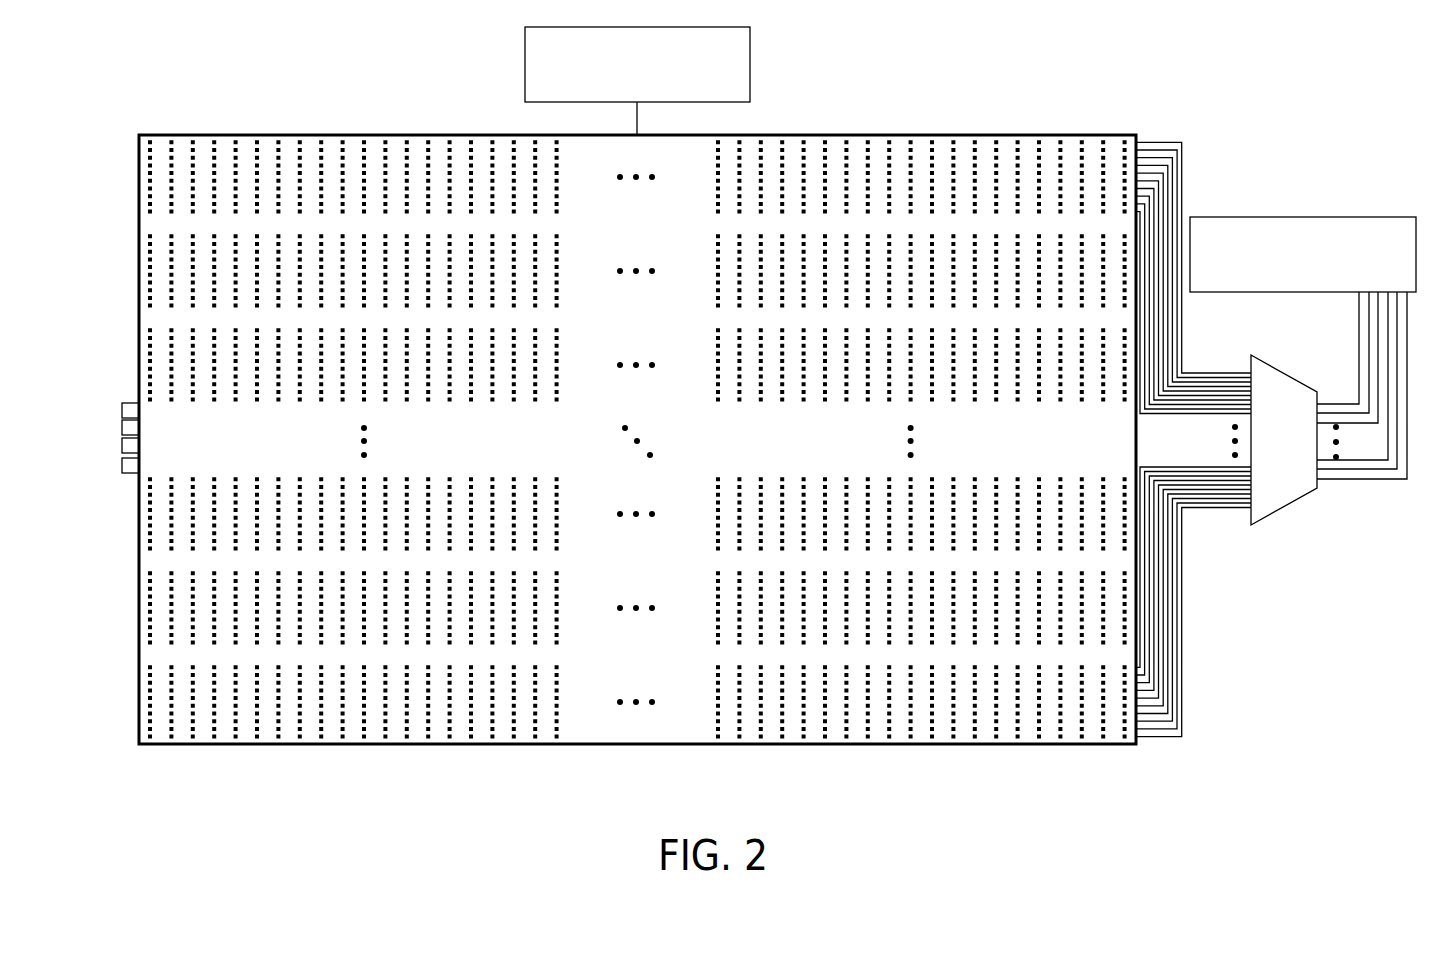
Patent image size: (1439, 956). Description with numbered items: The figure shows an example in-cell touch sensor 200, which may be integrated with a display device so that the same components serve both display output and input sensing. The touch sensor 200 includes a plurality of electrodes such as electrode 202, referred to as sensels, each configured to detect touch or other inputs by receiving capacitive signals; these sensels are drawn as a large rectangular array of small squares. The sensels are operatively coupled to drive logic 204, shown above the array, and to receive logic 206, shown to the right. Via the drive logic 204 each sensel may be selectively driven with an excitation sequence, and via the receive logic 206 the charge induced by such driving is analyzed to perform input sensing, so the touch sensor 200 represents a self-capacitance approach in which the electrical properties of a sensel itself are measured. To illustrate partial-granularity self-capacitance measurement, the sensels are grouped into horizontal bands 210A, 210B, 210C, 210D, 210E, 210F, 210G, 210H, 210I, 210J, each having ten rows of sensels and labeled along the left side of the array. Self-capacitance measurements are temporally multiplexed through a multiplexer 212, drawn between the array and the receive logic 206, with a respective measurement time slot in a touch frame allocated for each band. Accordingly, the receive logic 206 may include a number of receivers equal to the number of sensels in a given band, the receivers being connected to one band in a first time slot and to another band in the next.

The in-cell touch sensor 200 is at (906, 80).
The electrode 202 is at (257, 140).
The drive logic 204 is at (637, 81).
The receive logic 206 is at (1303, 254).
The multiplexer 212 is at (1319, 408).
The horizontal band 210A is at (138, 142).
The horizontal band 210B is at (138, 236).
The horizontal band 210C is at (138, 330).
The horizontal band 210D is at (122, 410).
The horizontal band 210E is at (122, 428).
The horizontal band 210F is at (122, 445).
The horizontal band 210G is at (122, 466).
The horizontal band 210H is at (138, 479).
The horizontal band 210I is at (138, 573).
The horizontal band 210J is at (138, 667).